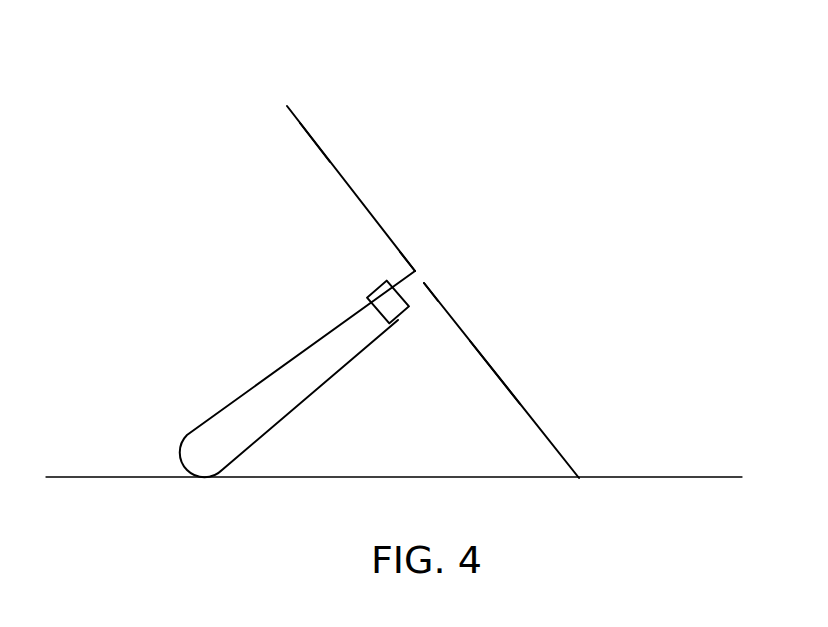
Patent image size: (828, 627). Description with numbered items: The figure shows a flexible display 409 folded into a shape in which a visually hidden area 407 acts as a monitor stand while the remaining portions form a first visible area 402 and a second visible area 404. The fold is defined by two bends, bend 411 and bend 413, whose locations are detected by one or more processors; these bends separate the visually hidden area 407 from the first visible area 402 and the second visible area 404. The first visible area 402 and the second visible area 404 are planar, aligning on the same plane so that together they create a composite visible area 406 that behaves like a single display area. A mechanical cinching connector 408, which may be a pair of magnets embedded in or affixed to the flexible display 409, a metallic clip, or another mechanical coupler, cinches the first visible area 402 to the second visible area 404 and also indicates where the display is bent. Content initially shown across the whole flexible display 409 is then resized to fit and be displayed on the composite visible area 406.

The first visible area 402 is at (316, 134).
The second visible area 404 is at (560, 441).
The composite visible area 406 is at (348, 180).
The visually hidden area 407 is at (248, 390).
The mechanical cinching connector 408 is at (388, 339).
The flexible display 409 is at (548, 225).
The bend 411 is at (407, 269).
The bend 413 is at (427, 305).